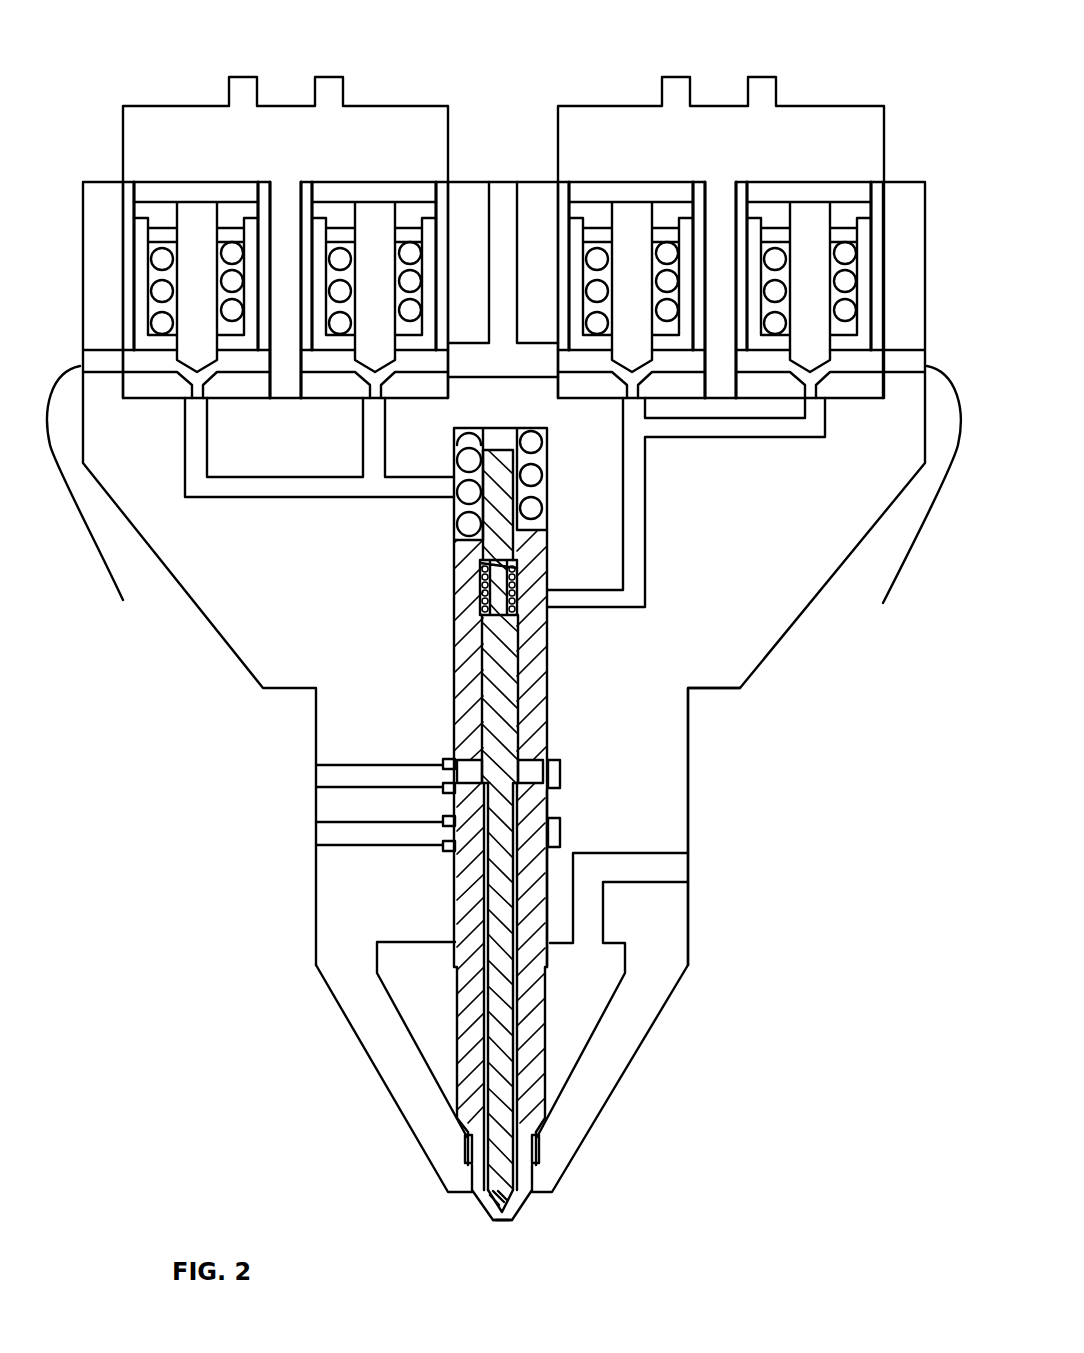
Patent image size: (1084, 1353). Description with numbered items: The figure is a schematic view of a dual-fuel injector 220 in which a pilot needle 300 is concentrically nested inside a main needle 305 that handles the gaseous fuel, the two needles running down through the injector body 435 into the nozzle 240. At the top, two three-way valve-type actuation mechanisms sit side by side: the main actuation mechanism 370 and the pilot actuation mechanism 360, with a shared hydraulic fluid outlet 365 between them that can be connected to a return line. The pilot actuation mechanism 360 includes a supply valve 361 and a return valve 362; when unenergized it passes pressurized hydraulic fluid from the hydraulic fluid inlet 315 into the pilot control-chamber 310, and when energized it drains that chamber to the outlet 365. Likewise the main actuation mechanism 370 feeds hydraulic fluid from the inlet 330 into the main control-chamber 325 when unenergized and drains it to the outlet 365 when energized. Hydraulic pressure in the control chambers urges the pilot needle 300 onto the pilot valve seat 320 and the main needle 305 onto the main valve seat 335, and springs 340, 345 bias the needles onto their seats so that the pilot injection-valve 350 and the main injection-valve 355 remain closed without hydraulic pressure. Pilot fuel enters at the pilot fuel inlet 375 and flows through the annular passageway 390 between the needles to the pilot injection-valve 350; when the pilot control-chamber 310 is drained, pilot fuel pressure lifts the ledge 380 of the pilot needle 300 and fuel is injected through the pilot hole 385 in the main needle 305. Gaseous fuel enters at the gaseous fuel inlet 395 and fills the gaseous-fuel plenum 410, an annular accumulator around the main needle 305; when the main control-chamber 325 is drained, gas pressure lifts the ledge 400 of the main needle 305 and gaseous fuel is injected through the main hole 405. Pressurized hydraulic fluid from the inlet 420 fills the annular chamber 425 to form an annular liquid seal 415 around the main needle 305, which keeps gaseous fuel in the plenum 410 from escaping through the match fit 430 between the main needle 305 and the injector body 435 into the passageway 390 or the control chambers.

The dual-fuel injector 220 is at (67, 87).
The main actuation mechanism 370 is at (188, 98).
The pilot actuation mechanism 360 is at (851, 98).
The hydraulic fluid outlet 365 is at (505, 182).
The return valve 362 is at (611, 389).
The supply valve 361 is at (829, 392).
The main control-chamber 325 is at (450, 515).
The spring 345 is at (547, 506).
The pilot control-chamber 310 is at (478, 580).
The spring 340 is at (480, 610).
The main needle 305 is at (470, 683).
The pilot needle 300 is at (513, 677).
The hydraulic fluid inlet 330 is at (100, 499).
The hydraulic fluid inlet 315 is at (910, 505).
The pilot fuel inlet 375 is at (312, 772).
The ledge 380 is at (462, 780).
The injector body 435 is at (692, 702).
The annular liquid seal 415 is at (576, 809).
The hydraulic fluid inlet 420 is at (305, 830).
The annular chamber 425 is at (558, 825).
The annular passageway 390 is at (485, 915).
The gaseous fuel inlet 395 is at (692, 872).
The match fit 430 is at (550, 892).
The ledge 400 is at (457, 977).
The gaseous-fuel plenum 410 is at (575, 1005).
The nozzle 240 is at (400, 1136).
The main valve seat 335 is at (560, 1128).
The main hole 405 is at (444, 1157).
The main injection-valve 355 is at (556, 1136).
The pilot hole 385 is at (476, 1212).
The pilot valve seat 320 is at (520, 1208).
The pilot injection-valve 350 is at (518, 1226).